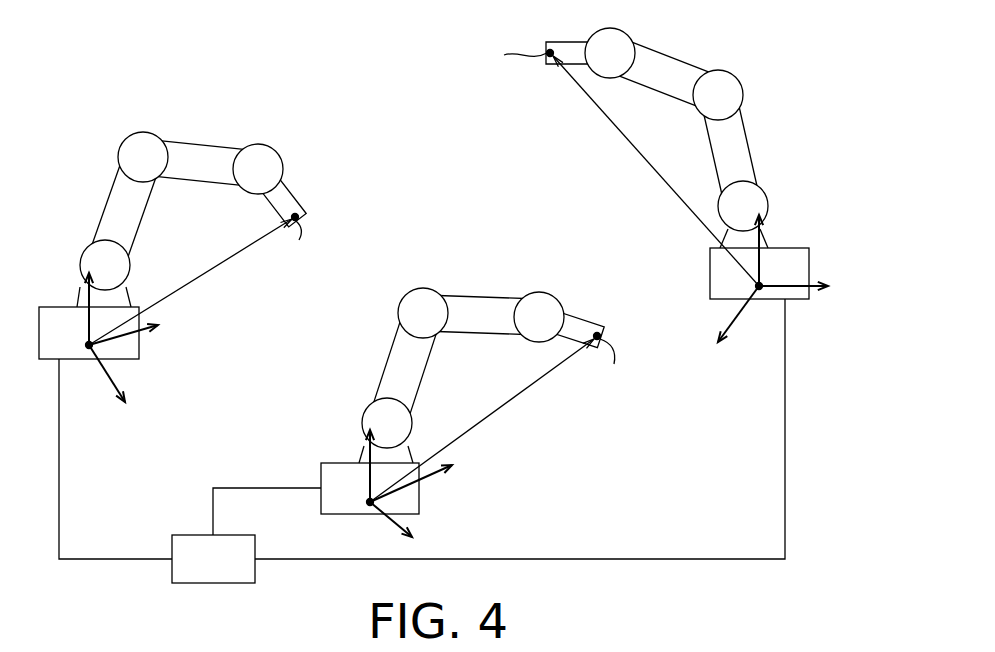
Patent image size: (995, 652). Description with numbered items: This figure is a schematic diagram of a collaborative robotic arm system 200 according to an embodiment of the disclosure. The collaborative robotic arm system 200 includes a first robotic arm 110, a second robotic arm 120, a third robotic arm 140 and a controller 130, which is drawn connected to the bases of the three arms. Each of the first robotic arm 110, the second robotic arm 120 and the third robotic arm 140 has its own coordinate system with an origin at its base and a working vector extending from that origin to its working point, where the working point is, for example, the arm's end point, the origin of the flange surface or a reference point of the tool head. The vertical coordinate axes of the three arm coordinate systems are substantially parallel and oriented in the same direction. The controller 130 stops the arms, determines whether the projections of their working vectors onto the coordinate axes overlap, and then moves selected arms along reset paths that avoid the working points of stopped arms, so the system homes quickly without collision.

The collaborative robotic arm system 200 is at (200, 51).
The first robotic arm 110 is at (123, 207).
The second robotic arm 120 is at (731, 148).
The controller 130 is at (234, 572).
The third robotic arm 140 is at (398, 370).